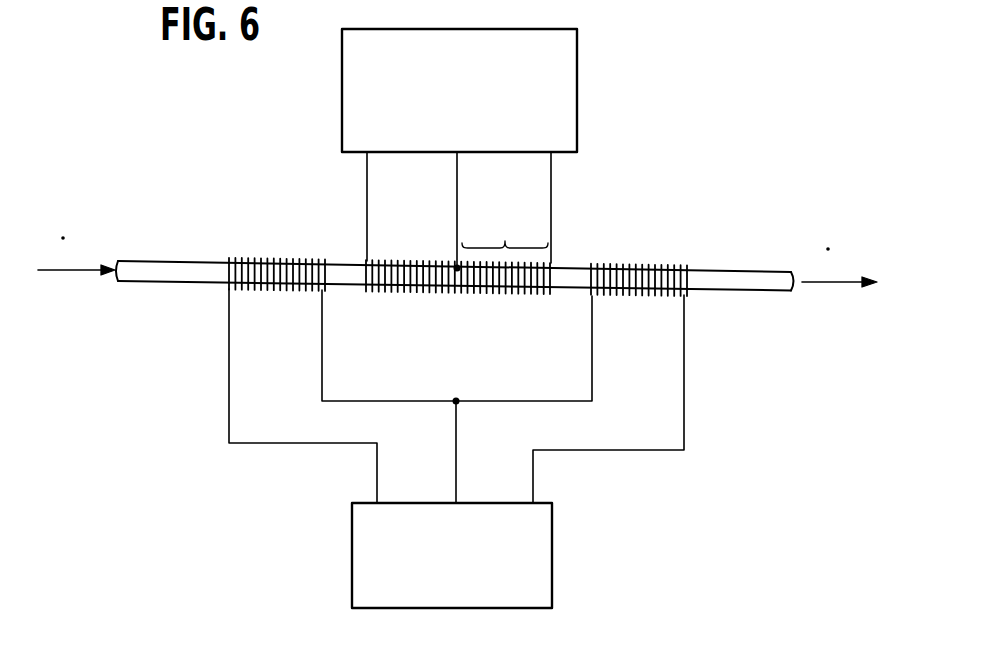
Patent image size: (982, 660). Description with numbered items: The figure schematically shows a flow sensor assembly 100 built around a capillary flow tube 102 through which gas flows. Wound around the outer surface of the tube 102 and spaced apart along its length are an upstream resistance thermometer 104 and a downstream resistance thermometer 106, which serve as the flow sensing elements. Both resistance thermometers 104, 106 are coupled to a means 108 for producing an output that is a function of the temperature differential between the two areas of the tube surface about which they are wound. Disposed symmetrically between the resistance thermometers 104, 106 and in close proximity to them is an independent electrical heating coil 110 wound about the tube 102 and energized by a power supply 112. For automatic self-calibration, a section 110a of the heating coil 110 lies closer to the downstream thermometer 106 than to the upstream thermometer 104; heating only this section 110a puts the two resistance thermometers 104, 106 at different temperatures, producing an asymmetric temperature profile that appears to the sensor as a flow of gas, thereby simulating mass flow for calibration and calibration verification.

The flow sensor assembly 100 is at (693, 78).
The capillary flow tube 102 is at (185, 274).
The upstream resistance thermometer 104 is at (291, 261).
The downstream resistance thermometer 106 is at (637, 265).
The means for producing an output 108 is at (554, 545).
The electrical heating coil 110 is at (394, 290).
The section of the heating coil 110a is at (505, 229).
The power supply 112 is at (577, 127).